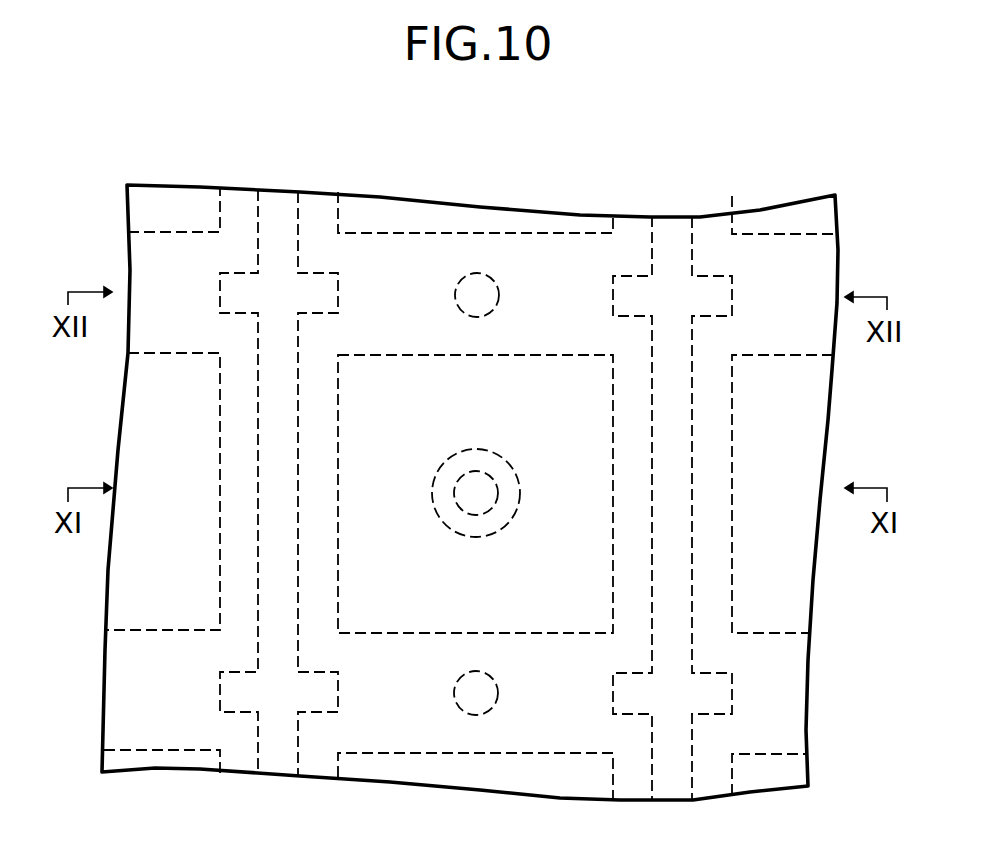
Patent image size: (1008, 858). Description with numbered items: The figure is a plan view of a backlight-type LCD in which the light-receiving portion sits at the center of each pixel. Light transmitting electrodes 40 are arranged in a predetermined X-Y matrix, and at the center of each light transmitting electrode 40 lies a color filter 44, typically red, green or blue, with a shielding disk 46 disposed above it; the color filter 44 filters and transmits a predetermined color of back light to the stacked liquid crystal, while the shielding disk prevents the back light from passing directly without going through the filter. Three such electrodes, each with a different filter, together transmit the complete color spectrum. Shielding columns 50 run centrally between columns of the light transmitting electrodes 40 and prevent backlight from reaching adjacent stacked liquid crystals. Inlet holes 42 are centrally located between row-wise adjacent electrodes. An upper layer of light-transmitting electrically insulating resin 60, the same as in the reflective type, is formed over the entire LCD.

The light transmitting electrode 40 is at (508, 620).
The inlet hole 42 is at (477, 273).
The color filter 44 is at (476, 497).
The outer contact ring 46 is at (497, 527).
The shielding column 50 is at (705, 695).
The light-transmitting electrically insulating resin 60 is at (632, 243).